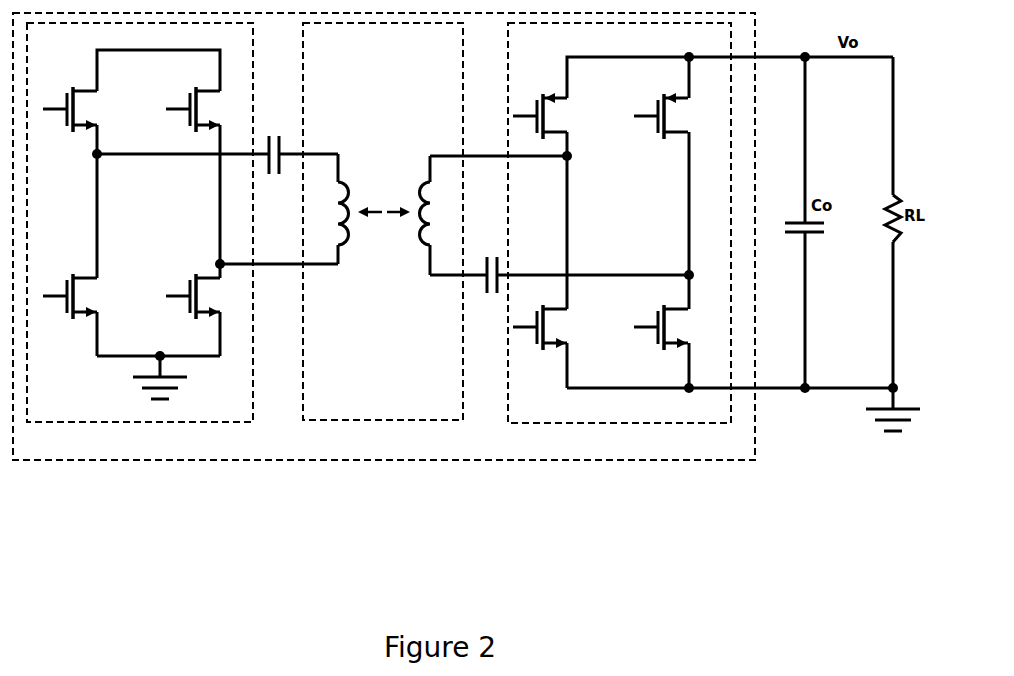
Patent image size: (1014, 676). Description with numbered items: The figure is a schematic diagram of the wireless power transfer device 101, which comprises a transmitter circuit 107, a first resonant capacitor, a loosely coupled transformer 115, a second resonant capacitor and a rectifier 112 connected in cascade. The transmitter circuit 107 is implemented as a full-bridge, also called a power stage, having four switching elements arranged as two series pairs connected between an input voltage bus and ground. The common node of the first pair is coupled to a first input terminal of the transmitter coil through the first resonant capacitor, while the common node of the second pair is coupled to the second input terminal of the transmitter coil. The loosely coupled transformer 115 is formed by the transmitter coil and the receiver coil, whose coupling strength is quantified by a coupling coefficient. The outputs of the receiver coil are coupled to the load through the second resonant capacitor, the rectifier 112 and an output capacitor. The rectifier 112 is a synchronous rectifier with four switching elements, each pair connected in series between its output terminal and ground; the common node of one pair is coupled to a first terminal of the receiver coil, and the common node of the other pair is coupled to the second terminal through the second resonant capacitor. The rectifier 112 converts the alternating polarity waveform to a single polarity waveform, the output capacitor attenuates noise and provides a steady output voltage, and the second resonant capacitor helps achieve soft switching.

The wireless power transfer device 101 is at (384, 236).
The transmitter circuit 107 is at (140, 222).
The loosely coupled transformer 115 is at (383, 221).
The rectifier 112 is at (619, 223).